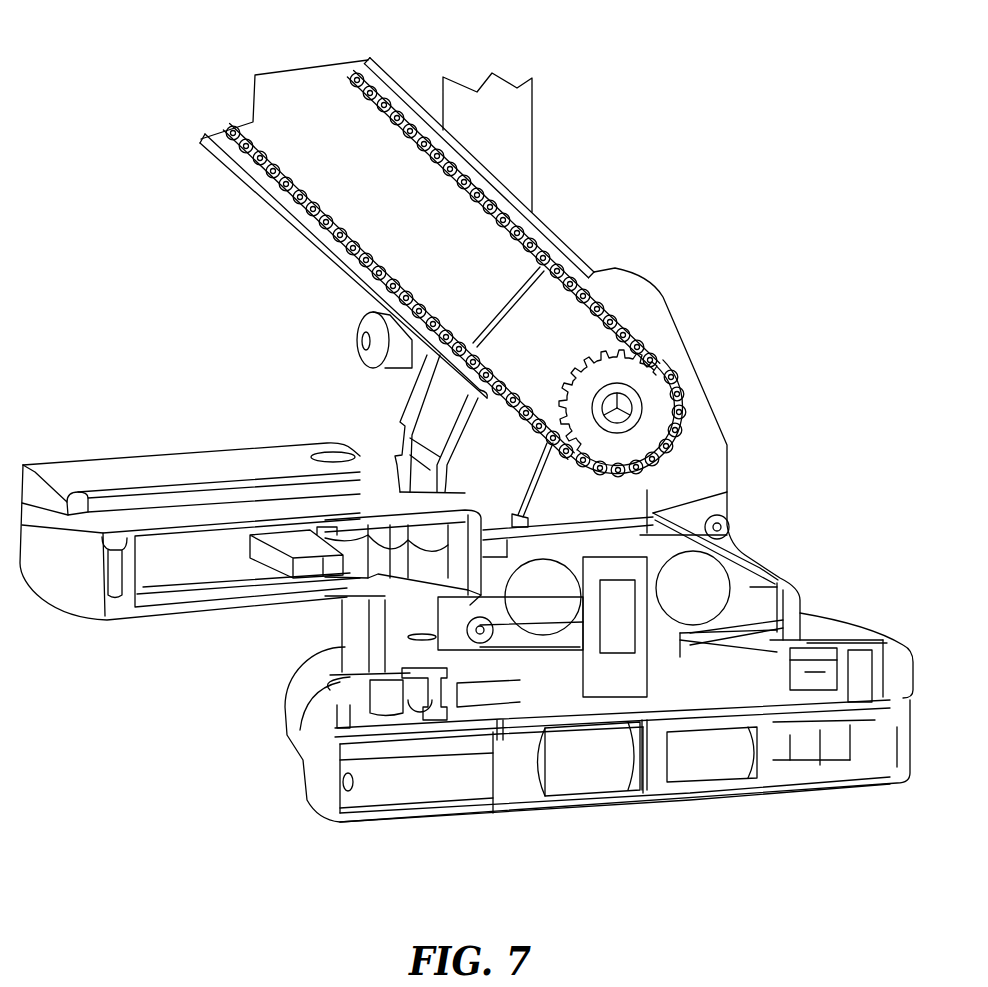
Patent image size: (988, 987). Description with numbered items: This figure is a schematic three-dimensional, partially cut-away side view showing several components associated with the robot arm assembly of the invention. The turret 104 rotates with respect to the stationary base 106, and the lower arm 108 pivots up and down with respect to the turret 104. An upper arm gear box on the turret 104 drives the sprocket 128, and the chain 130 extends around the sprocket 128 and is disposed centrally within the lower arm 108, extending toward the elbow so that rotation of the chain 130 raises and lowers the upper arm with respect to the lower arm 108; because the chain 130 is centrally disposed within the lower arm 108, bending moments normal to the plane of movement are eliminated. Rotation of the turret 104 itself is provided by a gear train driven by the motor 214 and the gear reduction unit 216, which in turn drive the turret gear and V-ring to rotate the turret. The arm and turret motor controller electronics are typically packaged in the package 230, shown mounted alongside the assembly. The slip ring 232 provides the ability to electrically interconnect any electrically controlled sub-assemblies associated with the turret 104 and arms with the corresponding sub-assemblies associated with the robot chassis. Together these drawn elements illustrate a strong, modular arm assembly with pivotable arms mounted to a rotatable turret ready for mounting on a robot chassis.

The turret 104 is at (897, 650).
The stationary base 106 is at (432, 745).
The lower arm 108 is at (402, 88).
The sprocket 128 is at (655, 402).
The chain 130 is at (527, 237).
The motor 214 is at (598, 772).
The gear reduction unit 216 is at (717, 760).
The package 230 is at (85, 593).
The slip ring 232 is at (645, 603).